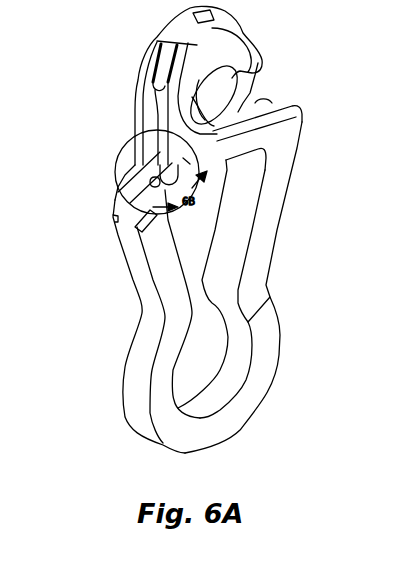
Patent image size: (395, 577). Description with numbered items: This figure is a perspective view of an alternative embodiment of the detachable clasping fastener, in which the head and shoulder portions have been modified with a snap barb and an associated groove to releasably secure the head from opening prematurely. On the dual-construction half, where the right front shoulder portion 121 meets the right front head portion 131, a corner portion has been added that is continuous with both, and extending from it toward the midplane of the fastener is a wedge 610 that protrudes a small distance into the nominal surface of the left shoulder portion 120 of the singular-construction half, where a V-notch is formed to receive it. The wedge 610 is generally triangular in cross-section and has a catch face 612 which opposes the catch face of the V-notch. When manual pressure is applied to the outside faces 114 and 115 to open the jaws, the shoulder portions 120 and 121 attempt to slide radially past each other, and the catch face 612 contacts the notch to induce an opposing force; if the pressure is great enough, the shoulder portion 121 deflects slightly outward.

The outside face 114 is at (143, 275).
The outside face 115 is at (262, 230).
The right front shoulder portion 121 is at (277, 133).
The right front head portion 131 is at (180, 105).
The left shoulder portion 120 is at (145, 173).
The catch face 612 is at (203, 170).
The wedge 610 is at (186, 161).